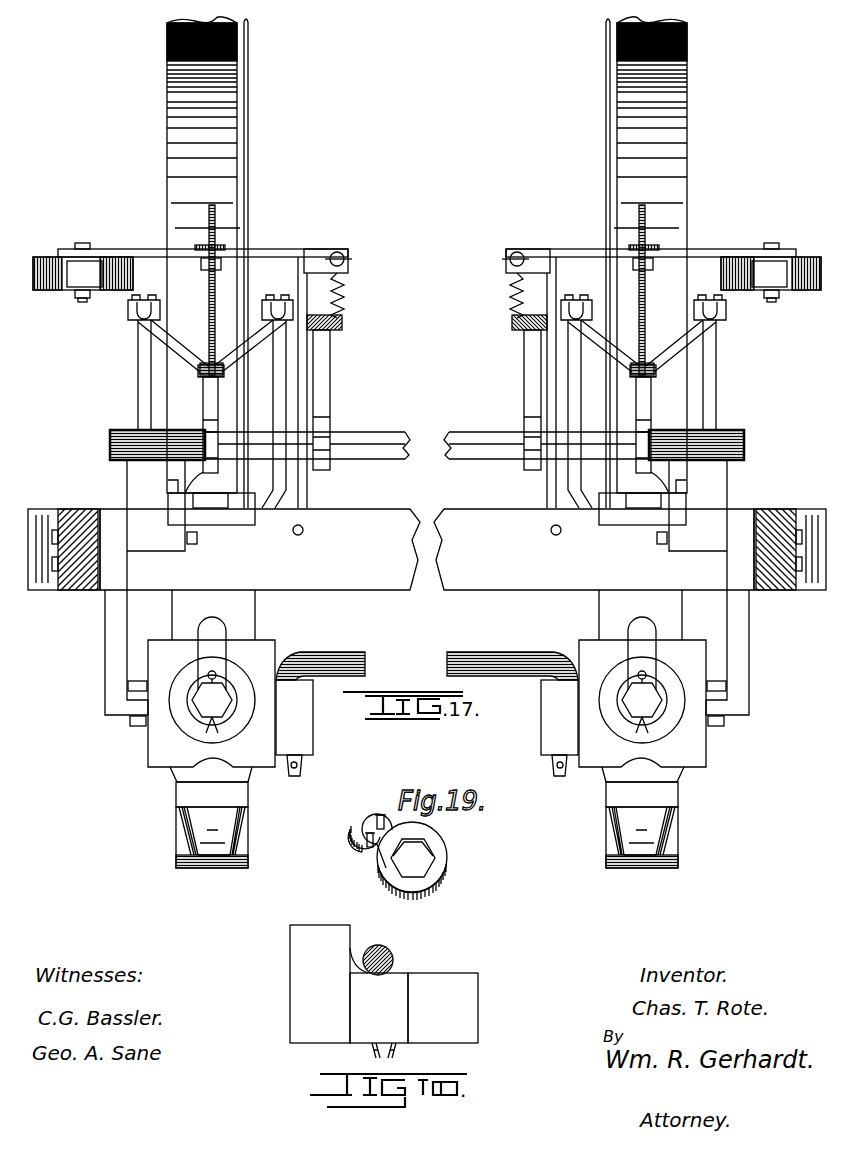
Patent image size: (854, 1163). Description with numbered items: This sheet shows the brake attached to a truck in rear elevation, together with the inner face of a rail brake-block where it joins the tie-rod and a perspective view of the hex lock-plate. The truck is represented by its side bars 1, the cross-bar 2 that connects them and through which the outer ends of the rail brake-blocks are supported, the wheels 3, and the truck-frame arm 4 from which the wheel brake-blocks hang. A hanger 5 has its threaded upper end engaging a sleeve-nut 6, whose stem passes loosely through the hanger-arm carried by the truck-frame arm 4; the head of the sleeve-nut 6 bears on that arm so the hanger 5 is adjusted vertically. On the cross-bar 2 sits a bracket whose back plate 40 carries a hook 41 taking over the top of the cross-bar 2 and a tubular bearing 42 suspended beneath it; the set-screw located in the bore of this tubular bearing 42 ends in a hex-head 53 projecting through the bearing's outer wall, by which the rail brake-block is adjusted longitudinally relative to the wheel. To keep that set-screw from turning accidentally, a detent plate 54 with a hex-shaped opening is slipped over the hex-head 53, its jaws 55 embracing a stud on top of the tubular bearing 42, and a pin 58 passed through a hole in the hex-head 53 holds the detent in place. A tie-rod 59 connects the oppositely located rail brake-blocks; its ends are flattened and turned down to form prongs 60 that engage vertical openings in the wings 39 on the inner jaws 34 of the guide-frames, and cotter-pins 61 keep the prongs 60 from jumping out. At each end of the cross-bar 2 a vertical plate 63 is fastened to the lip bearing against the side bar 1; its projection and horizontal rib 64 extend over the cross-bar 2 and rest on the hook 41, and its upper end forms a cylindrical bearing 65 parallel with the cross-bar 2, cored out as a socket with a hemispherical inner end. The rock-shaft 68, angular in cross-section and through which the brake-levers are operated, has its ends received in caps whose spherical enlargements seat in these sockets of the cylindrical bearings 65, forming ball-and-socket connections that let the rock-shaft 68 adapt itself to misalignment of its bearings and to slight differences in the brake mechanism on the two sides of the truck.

In FIG. 17, the side bars 1 is at (68, 510).
In FIG. 17, the cross-bar 2 is at (373, 516).
In FIG. 17, the wheels 3 is at (172, 176).
In FIG. 17, the truck-frame arm 4 is at (54, 263).
In FIG. 17, the hanger 5 is at (206, 331).
In FIG. 17, the sleeve-nut 6 is at (202, 263).
In FIG. 17, the inner jaws 34 is at (262, 758).
In FIG. 18, the inner jaws 34 is at (470, 1009).
In FIG. 17, the wings 39 is at (305, 734).
In FIG. 18, the wings 39 is at (395, 1018).
In FIG. 17, the back plate 40 is at (243, 613).
In FIG. 17, the hook 41 is at (243, 518).
In FIG. 17, the tubular bearing 42 is at (179, 673).
In FIG. 17, the hex-head 53 is at (629, 703).
In FIG. 17, the plate 54 is at (205, 722).
In FIG. 19, the plate 54 is at (447, 875).
In FIG. 19, the jaws 55 is at (368, 833).
In FIG. 17, the pin 58 is at (222, 698).
In FIG. 17, the tie-rod 59 is at (492, 656).
In FIG. 18, the tie-rod 59 is at (392, 955).
In FIG. 17, the prongs 60 is at (302, 771).
In FIG. 18, the prongs 60 is at (375, 1048).
In FIG. 17, the cotter-pins 61 is at (558, 771).
In FIG. 18, the cotter-pins 61 is at (397, 1050).
In FIG. 17, the vertical plate 63 is at (128, 488).
In FIG. 17, the projection and rib 64 is at (172, 493).
In FIG. 17, the cylindrical bearing 65 is at (118, 428).
In FIG. 17, the rock-shaft 68 is at (492, 433).